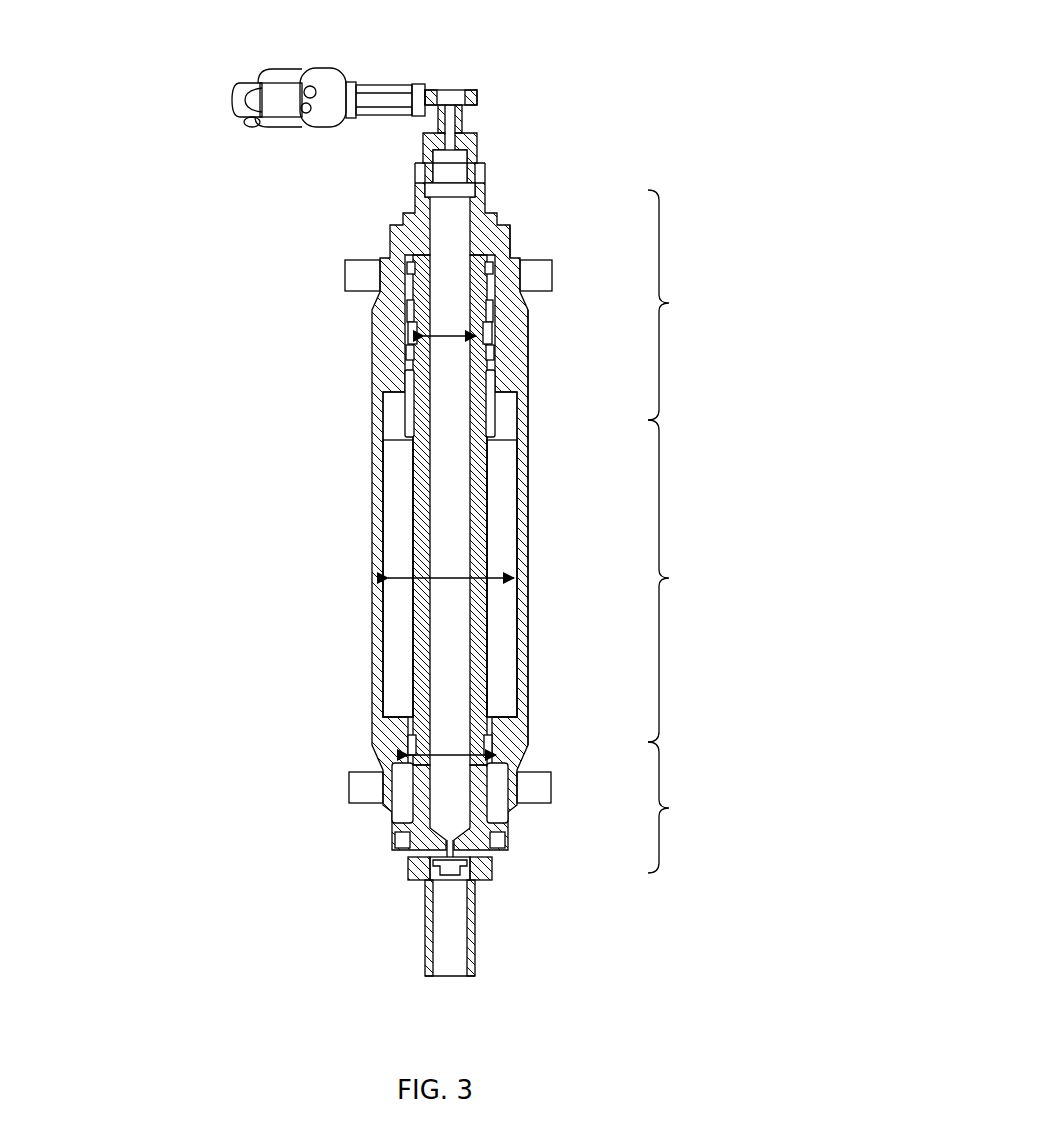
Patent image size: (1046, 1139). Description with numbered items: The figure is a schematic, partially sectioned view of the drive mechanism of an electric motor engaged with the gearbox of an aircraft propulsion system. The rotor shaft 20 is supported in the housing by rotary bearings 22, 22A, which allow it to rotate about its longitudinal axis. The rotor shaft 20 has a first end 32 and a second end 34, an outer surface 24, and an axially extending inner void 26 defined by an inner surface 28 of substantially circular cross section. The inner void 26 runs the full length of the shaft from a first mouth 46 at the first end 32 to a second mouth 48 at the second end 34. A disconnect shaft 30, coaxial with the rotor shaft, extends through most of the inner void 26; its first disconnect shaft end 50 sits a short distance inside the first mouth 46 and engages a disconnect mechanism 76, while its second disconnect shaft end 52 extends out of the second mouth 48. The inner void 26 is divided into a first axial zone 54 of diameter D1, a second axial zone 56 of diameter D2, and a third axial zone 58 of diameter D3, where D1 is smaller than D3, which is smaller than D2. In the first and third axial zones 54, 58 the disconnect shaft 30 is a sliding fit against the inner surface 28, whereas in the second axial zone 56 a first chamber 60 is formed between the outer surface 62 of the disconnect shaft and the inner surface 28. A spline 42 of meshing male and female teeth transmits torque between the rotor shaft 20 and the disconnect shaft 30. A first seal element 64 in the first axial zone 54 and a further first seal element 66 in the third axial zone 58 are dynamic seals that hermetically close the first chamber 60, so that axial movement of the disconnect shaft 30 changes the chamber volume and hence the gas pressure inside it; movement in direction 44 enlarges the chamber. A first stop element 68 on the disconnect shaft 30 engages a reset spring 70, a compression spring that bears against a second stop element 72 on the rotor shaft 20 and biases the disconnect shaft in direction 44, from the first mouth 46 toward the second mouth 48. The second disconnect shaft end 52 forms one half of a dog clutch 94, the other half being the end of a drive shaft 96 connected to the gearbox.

The rotor shaft 20 is at (537, 552).
The rotary bearing 22 is at (360, 270).
The rotary bearing 22A is at (365, 788).
The outer surface 24 is at (527, 640).
The inner void 26 is at (398, 552).
The inner surface 28 is at (527, 508).
The disconnect shaft 30 is at (408, 492).
The first end 32 is at (487, 165).
The second end 34 is at (400, 848).
The spline 42 is at (505, 305).
The direction 44 is at (280, 678).
The first mouth 46 is at (476, 148).
The second mouth 48 is at (500, 852).
The first disconnect shaft end 50 is at (416, 190).
The second disconnect shaft end 52 is at (425, 875).
The first axial zone 54 is at (677, 305).
The second axial zone 56 is at (677, 581).
The third axial zone 58 is at (677, 807).
The first chamber 60 is at (398, 665).
The outer surface 62 is at (398, 428).
The first seal element 64 is at (395, 355).
The first seal element 66 is at (515, 735).
The first stop element 68 is at (500, 440).
The reset spring 70 is at (495, 378).
The second stop element 72 is at (494, 362).
The disconnect mechanism 76 is at (418, 52).
The dog clutch 94 is at (393, 880).
The drive shaft 96 is at (475, 930).
The diameter D1 is at (472, 338).
The diameter D2 is at (452, 580).
The diameter D3 is at (408, 750).